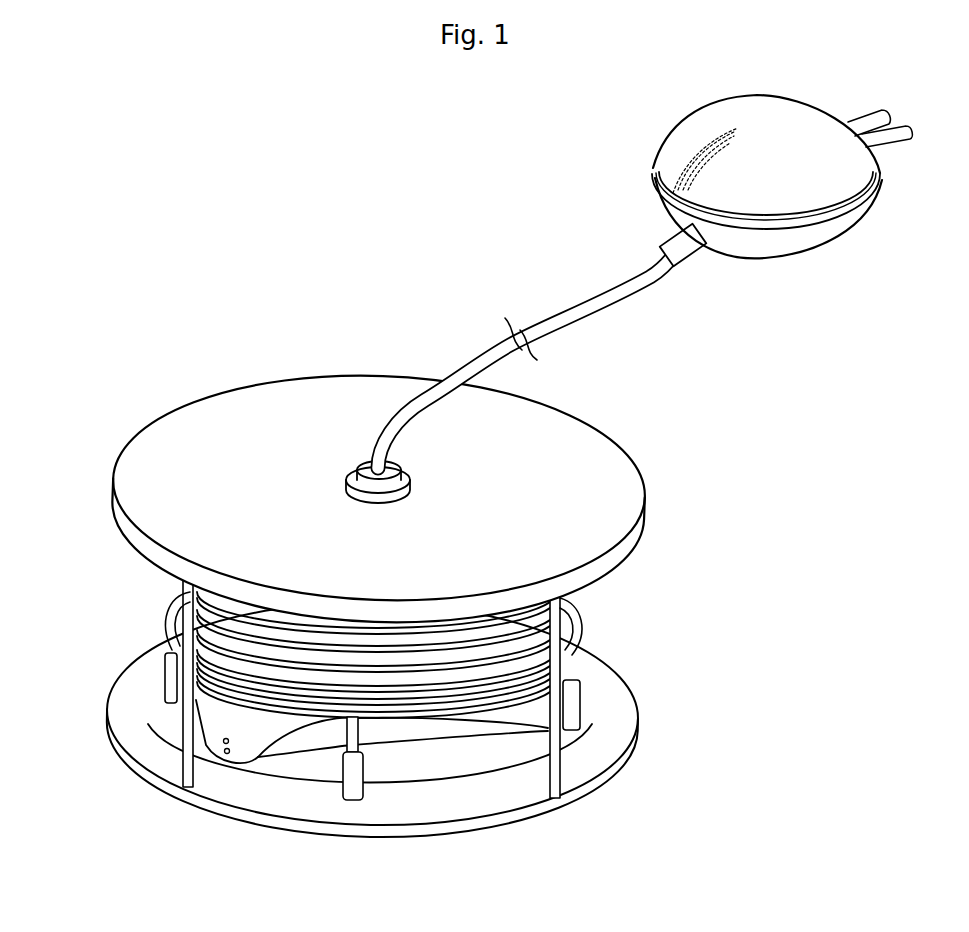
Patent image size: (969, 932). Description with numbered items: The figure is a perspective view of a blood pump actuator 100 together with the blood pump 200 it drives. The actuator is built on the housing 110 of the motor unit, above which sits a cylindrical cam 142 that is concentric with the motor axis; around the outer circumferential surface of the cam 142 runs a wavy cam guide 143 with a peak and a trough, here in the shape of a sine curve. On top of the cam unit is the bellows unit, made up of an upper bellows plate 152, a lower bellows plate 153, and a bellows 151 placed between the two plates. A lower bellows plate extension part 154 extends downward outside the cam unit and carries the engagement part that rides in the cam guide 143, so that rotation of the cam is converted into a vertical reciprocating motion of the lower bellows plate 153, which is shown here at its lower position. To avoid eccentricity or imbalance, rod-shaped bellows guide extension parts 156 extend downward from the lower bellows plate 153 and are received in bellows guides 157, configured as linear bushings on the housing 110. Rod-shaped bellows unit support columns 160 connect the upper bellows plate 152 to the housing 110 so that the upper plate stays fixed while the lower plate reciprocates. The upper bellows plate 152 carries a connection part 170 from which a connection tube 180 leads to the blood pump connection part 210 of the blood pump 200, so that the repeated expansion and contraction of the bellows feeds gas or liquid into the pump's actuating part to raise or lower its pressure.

The blood pump actuator 100 is at (181, 274).
The housing 110 is at (230, 790).
The cam 142 is at (505, 747).
The cam guide 143 is at (430, 735).
The bellows 151 is at (578, 640).
The upper bellows plate 152 is at (145, 486).
The lower bellows plate 153 is at (576, 618).
The lower bellows plate extension part 154 is at (217, 718).
The bellows guide extension part 156 is at (378, 730).
The bellows guide 157 is at (357, 795).
The bellows unit support column 160 is at (182, 594).
The connection part 170 is at (366, 462).
The connection tube 180 is at (416, 402).
The blood pump 200 is at (822, 258).
The blood pump connection part 210 is at (690, 248).